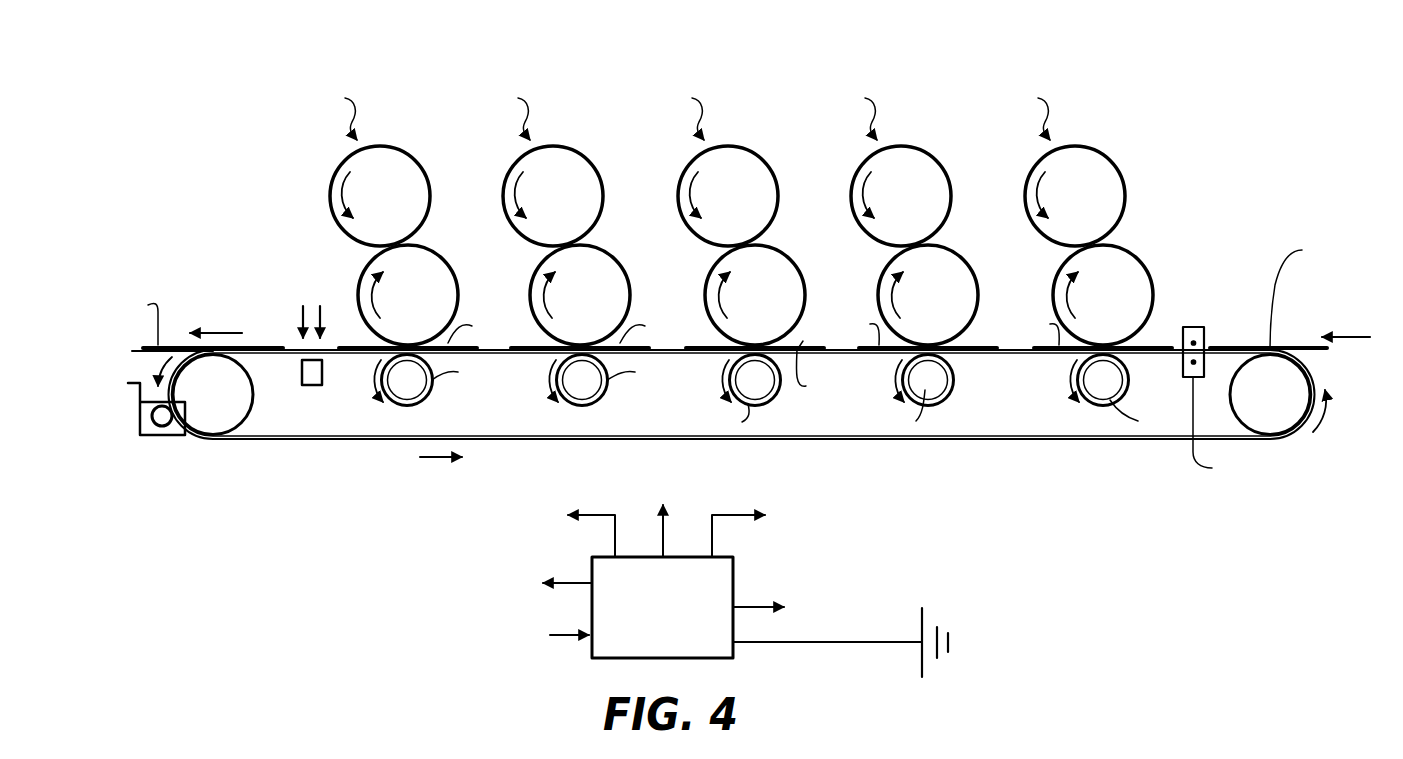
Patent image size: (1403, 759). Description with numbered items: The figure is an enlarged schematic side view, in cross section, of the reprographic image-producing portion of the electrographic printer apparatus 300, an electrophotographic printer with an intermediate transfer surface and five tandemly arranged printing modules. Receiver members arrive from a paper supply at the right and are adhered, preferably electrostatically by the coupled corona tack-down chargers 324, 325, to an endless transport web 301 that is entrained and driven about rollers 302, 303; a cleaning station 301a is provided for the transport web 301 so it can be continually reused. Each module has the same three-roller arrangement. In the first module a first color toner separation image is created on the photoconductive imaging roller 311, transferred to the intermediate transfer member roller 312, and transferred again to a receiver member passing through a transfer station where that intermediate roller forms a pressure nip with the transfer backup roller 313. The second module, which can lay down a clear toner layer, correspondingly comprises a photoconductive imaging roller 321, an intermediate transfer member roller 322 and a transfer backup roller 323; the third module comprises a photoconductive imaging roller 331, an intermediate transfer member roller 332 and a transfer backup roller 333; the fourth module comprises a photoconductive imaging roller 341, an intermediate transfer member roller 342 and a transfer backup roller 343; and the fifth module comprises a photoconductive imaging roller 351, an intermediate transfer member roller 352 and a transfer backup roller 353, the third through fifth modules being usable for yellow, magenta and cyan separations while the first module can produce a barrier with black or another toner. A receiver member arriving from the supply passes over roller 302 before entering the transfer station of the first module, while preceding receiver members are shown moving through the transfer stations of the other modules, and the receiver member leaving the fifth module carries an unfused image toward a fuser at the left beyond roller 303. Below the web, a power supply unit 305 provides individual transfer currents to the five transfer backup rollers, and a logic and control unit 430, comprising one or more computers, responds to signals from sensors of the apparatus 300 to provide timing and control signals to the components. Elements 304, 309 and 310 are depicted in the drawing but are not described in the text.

The electrographic printer apparatus 300 is at (1122, 86).
The endless transport web 301 is at (942, 440).
The cleaning station 301a is at (128, 385).
The roller 302 is at (1268, 442).
The roller 303 is at (212, 440).
The web sensor 304 is at (311, 386).
The power supply unit 305 is at (733, 585).
The first transport web direction/sheet input arrow 309 is at (305, 308).
The second transport web direction/sheet input arrow 310 is at (322, 322).
The photoconductive imaging roller PC1 311 is at (1112, 162).
The intermediate transfer member roller ITM1 312 is at (1138, 260).
The transfer backup roller TR1 313 is at (1100, 397).
The photoconductive imaging roller PC2 321 is at (937, 162).
The intermediate transfer member roller ITM2 322 is at (963, 260).
The transfer backup roller TR2 323 is at (935, 390).
The corona tack-down charger 324 is at (1193, 327).
The corona tack-down charger 325 is at (1226, 429).
The photoconductive imaging roller PC3 331 is at (765, 162).
The intermediate transfer member roller ITM3 332 is at (790, 260).
The transfer backup roller TR3 333 is at (761, 404).
The photoconductive imaging roller PC4 341 is at (590, 162).
The intermediate transfer member roller ITM4 342 is at (615, 260).
The transfer backup roller TR4 343 is at (585, 385).
The photoconductive imaging roller PC5 351 is at (417, 162).
The intermediate transfer member roller ITM5 352 is at (443, 260).
The transfer backup roller TR5 353 is at (410, 385).
The logic and control unit 430 is at (477, 636).